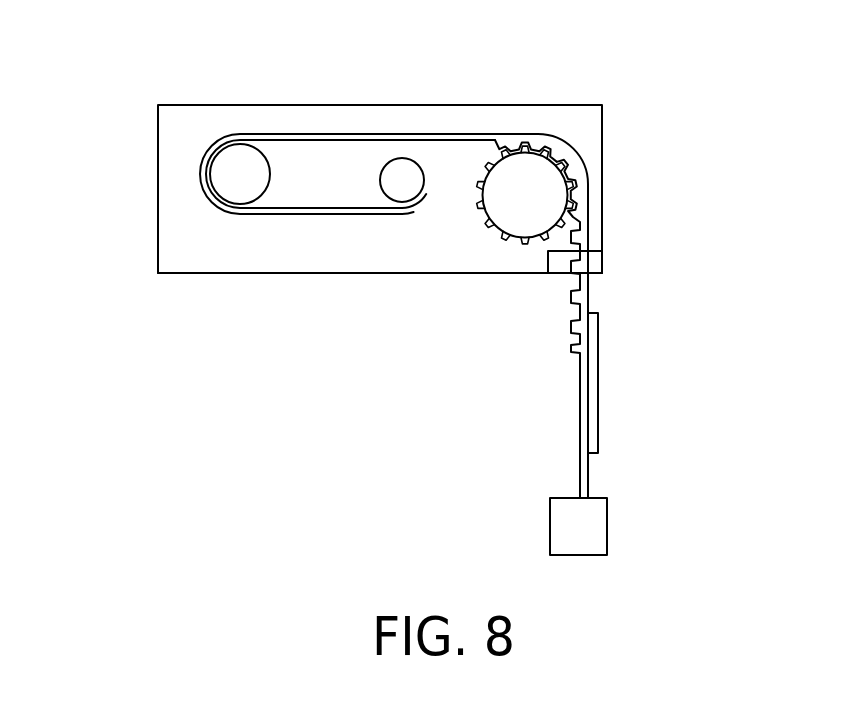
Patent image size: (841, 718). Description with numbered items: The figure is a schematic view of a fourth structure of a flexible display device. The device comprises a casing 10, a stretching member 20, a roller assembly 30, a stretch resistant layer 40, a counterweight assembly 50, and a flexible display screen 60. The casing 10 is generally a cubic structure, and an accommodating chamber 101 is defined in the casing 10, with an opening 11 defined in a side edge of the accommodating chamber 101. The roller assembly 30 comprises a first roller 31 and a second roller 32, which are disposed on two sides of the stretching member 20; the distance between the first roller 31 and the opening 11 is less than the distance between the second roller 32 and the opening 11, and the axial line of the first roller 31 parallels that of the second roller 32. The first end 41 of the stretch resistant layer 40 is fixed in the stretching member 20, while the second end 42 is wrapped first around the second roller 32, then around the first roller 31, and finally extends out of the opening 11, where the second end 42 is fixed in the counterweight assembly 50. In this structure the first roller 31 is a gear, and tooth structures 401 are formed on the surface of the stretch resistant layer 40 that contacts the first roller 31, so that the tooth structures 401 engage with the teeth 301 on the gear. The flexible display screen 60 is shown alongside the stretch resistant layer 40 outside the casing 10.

The casing 10 is at (198, 240).
The accommodating chamber 101 is at (268, 252).
The opening 11 is at (593, 262).
The stretching member 20 is at (403, 180).
The roller assembly 30 is at (484, 128).
The first roller 31 is at (617, 153).
The second roller 32 is at (242, 172).
The teeth 301 is at (578, 212).
The stretch resistant layer 40 is at (495, 316).
The tooth structures 401 is at (573, 350).
The first end 41 is at (421, 190).
The second end 42 is at (588, 498).
The counterweight assembly 50 is at (580, 527).
The flexible display screen 60 is at (592, 388).